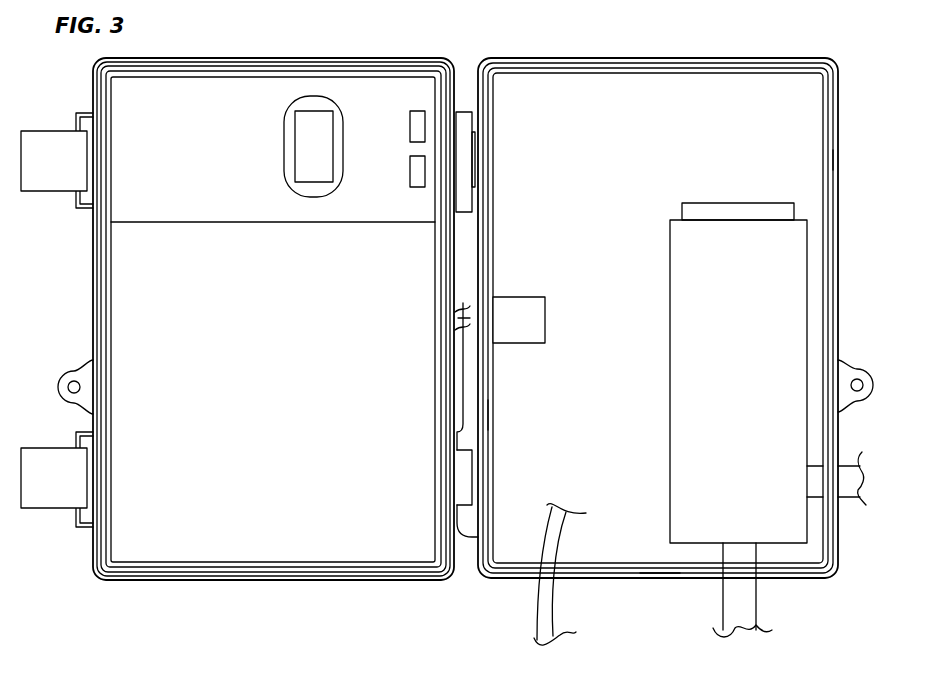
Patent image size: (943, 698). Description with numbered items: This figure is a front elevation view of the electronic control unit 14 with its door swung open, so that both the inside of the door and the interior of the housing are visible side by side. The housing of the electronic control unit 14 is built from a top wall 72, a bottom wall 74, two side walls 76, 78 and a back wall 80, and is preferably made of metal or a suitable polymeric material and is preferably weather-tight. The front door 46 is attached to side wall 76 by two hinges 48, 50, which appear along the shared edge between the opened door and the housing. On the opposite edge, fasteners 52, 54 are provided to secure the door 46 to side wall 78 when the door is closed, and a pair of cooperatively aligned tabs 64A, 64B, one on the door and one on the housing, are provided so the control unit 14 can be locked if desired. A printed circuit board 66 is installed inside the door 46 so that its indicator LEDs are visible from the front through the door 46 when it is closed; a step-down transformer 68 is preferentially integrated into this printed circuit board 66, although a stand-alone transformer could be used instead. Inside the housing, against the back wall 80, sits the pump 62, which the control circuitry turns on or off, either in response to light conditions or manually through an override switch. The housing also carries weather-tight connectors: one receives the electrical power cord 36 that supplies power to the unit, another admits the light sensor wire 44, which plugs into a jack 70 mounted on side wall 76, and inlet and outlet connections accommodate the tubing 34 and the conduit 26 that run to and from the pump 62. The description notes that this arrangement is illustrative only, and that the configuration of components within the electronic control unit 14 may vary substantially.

The electronic control unit 14 is at (740, 50).
The conduit 26 is at (855, 495).
The tubing 34 is at (733, 603).
The electrical power cord 36 is at (557, 630).
The light sensor wire 44 is at (462, 320).
The front door 46 is at (135, 300).
The hinge 48 is at (467, 167).
The hinge 50 is at (460, 468).
The fastener 52 is at (55, 183).
The fastener 54 is at (60, 498).
The pump 62 is at (680, 412).
The tab 64A is at (62, 386).
The tab 64B is at (853, 396).
The printed circuit board 66 is at (287, 210).
The transformer 68 is at (320, 157).
The jack 70 is at (540, 330).
The top wall 72 is at (655, 62).
The bottom wall 74 is at (656, 572).
The side wall 76 is at (486, 414).
The side wall 78 is at (828, 157).
The back wall 80 is at (752, 185).